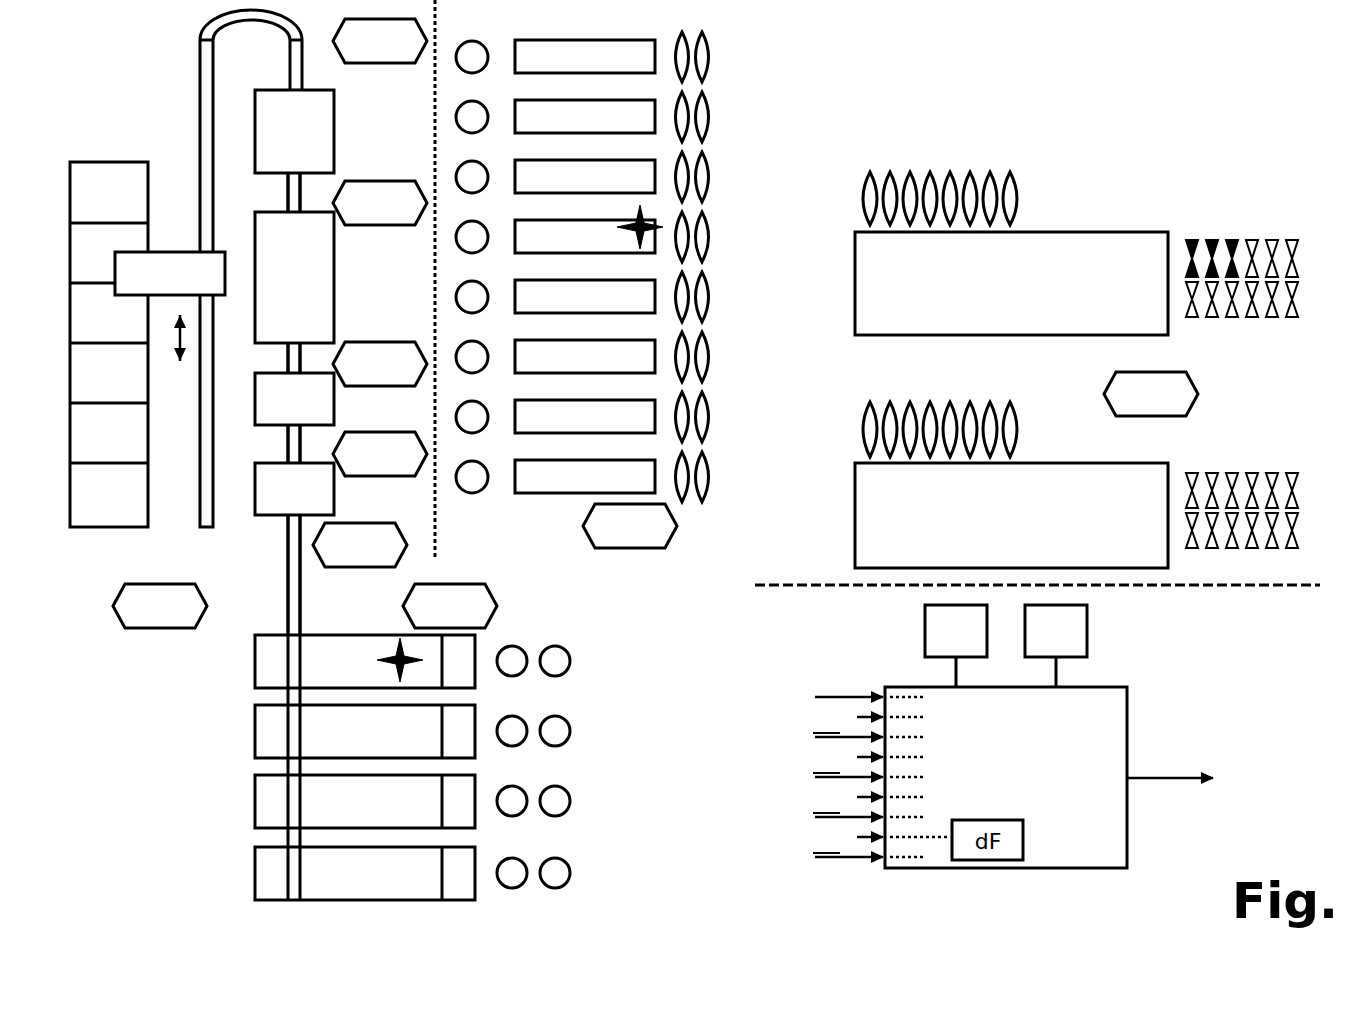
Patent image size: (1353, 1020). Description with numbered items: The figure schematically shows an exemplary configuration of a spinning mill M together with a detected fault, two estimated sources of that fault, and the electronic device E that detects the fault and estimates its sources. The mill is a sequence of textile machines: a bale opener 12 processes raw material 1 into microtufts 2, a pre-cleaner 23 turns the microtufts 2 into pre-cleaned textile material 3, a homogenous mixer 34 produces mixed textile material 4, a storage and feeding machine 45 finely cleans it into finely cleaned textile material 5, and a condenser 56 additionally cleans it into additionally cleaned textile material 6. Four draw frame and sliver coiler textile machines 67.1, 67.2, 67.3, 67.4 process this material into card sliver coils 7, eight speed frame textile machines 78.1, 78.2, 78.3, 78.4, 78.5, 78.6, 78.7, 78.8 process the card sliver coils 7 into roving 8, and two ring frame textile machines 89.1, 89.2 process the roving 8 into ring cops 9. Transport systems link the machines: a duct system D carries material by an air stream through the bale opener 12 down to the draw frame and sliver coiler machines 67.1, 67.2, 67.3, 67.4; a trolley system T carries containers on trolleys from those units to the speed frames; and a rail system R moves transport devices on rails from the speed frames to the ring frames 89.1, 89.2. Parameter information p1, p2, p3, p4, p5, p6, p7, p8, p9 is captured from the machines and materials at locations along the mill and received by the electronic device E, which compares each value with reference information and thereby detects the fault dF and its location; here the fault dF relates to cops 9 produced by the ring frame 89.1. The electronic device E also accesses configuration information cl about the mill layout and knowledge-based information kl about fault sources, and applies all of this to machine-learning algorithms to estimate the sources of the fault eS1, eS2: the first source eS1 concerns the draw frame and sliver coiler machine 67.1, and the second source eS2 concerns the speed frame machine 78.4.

The raw material 1 is at (96, 568).
The bale opener 12 is at (170, 273).
The duct system D is at (200, 92).
The microtufts 2 is at (342, 80).
The pre-cleaner 23 is at (294, 131).
The pre-cleaned textile material 3 is at (252, 207).
The homogenous mixer 34 is at (294, 277).
The mixed textile material 4 is at (249, 375).
The storage and feeding machine 45 is at (294, 399).
The finely cleaned textile material 5 is at (274, 457).
The condenser 56 is at (294, 489).
The additionally cleaned textile material 6 is at (274, 577).
The draw frame and sliver coiler textile machine 67.1 is at (365, 661).
The draw frame and sliver coiler textile machine 67.2 is at (365, 731).
The draw frame and sliver coiler textile machine 67.3 is at (365, 801).
The draw frame and sliver coiler textile machine 67.4 is at (365, 873).
The card sliver coils 7 is at (534, 614).
The speed frame textile machine 78.1 is at (585, 56).
The speed frame textile machine 78.2 is at (585, 116).
The speed frame textile machine 78.3 is at (585, 176).
The speed frame textile machine 78.4 is at (585, 236).
The speed frame textile machine 78.5 is at (585, 296).
The speed frame textile machine 78.6 is at (585, 356).
The speed frame textile machine 78.7 is at (585, 416).
The speed frame textile machine 78.8 is at (585, 476).
The roving 8 is at (712, 557).
The ring frame textile machine 89.1 is at (1011, 283).
The ring frame textile machine 89.2 is at (1011, 515).
The ring cops 9 is at (1254, 408).
The spinning mill M is at (1230, 104).
The rail system R is at (840, 195).
The trolley system T is at (472, 530).
The fault dF is at (1236, 243).
The first source of the fault eS1 is at (393, 650).
The second source of the fault eS2 is at (655, 227).
The parameter information p1 is at (160, 606).
The parameter information p2 is at (380, 41).
The parameter information p3 is at (380, 203).
The parameter information p4 is at (380, 364).
The parameter information p5 is at (380, 454).
The parameter information p6 is at (360, 545).
The parameter information p7 is at (450, 606).
The parameter information p8 is at (630, 526).
The parameter information p9 is at (1151, 394).
The electronic device E is at (1045, 781).
The configuration information cl is at (956, 646).
The knowledge-based information kl is at (1056, 646).